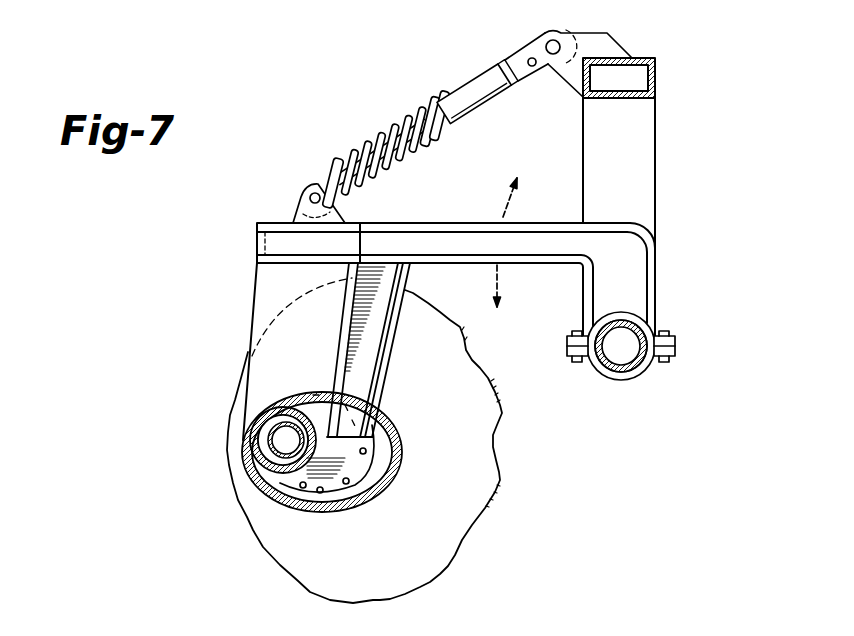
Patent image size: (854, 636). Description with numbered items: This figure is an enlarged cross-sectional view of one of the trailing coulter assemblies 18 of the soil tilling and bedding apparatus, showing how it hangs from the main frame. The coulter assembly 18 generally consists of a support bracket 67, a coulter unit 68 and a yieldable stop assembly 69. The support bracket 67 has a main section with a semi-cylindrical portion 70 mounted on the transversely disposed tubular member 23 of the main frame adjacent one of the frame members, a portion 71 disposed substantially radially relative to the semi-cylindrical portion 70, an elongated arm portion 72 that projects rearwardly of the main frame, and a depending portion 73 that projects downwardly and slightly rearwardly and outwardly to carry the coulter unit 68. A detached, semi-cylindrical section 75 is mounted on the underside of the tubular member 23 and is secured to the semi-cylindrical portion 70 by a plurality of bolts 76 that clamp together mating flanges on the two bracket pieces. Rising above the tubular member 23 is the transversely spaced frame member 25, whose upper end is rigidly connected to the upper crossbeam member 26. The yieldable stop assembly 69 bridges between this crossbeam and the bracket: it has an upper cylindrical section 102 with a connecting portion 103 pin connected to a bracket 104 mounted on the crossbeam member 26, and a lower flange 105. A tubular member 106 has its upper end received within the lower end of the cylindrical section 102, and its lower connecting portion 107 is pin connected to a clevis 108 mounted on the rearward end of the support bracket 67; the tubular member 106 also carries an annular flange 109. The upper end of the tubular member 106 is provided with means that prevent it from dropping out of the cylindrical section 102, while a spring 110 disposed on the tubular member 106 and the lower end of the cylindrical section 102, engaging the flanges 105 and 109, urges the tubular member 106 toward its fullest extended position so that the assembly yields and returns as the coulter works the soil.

The trailing coulter assembly 18 is at (288, 433).
The tubular member 23 is at (643, 330).
The transversely spaced member 25 is at (643, 173).
The upper crossbeam member 26 is at (653, 78).
The support bracket 67 is at (625, 248).
The coulter unit 68 is at (224, 373).
The yieldable stop assembly 69 is at (453, 84).
The semi-cylindrical portion 70 is at (633, 312).
The radial portion 71 is at (637, 273).
The elongated arm portion 72 is at (460, 221).
The depending portion 73 is at (267, 295).
The detached semi-cylindrical section 75 is at (627, 381).
The bolts 76 is at (677, 341).
The upper cylindrical section 102 is at (476, 120).
The connecting portion 103 is at (510, 60).
The bracket 104 is at (613, 45).
The lower flange 105 is at (455, 148).
The tubular member 106 is at (348, 150).
The lower connecting portion 107 is at (310, 180).
The clevis 108 is at (293, 207).
The annular flange 109 is at (323, 170).
The spring 110 is at (410, 123).